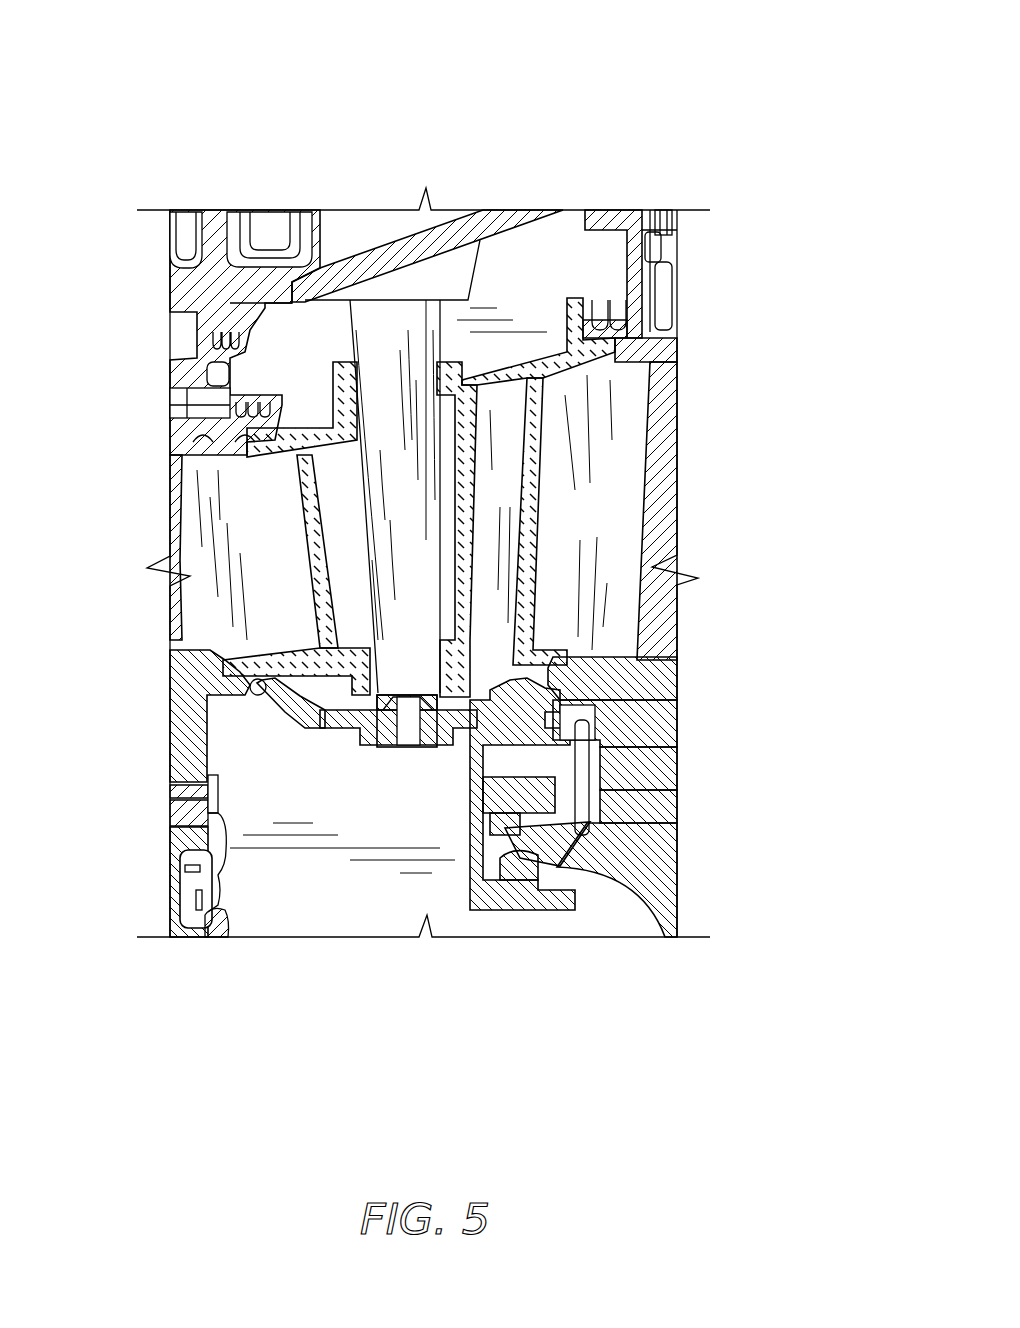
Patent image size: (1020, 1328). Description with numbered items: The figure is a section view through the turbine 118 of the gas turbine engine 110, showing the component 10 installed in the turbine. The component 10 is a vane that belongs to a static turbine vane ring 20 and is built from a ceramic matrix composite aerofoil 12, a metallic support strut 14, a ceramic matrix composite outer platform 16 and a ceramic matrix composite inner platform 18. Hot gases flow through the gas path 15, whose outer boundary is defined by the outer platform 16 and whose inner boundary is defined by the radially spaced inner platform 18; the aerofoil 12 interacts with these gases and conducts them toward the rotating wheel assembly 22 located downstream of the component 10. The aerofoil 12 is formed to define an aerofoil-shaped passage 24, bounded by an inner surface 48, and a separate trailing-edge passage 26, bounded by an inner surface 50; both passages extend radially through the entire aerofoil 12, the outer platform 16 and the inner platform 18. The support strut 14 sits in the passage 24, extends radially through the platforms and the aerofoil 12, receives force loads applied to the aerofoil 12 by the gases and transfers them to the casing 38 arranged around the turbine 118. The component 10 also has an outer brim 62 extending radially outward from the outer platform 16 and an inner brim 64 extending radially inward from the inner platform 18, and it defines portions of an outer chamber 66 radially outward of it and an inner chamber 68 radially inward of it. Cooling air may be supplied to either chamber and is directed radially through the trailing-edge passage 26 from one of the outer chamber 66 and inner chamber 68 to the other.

The gas turbine engine 110 is at (753, 68).
The turbine 118 is at (135, 240).
The outer chamber 66 is at (278, 310).
The casing 38 is at (365, 238).
The metallic support strut 14 is at (513, 390).
The trailing-edge passage 26 is at (450, 436).
The outer brim 62 is at (320, 392).
The ceramic matrix composite outer platform 16 is at (618, 362).
The ceramic matrix composite aerofoil 12 is at (423, 524).
The component 10 is at (268, 530).
The inner surface 48 is at (315, 486).
The inner surface 50 is at (512, 538).
The gas path 15 is at (207, 566).
The ceramic matrix composite inner platform 18 is at (553, 658).
The rotating wheel assembly 22 is at (183, 708).
The passage 24 is at (347, 697).
The inner brim 64 is at (343, 598).
The inner chamber 68 is at (296, 908).
The turbine vane ring 20 is at (516, 927).